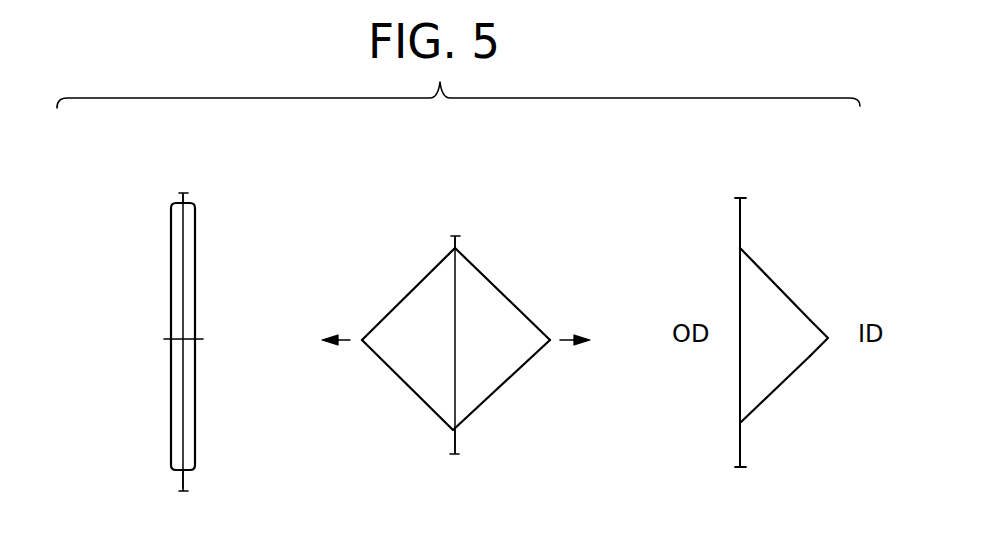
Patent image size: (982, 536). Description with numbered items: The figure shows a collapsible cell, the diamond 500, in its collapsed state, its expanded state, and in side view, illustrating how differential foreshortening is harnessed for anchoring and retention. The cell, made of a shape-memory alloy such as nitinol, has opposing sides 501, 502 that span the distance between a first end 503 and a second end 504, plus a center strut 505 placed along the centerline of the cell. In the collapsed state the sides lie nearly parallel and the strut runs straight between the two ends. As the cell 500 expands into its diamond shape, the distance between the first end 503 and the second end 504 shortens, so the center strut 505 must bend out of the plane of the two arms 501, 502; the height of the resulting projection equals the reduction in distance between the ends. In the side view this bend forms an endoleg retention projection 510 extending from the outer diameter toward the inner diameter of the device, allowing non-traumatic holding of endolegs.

The diamond 500 is at (218, 205).
The opposing side 501 is at (171, 246).
The opposing side 502 is at (196, 243).
The first end 503 is at (172, 204).
The second end 504 is at (172, 471).
The center strut 505 is at (187, 290).
The endoleg retention projection 510 is at (813, 328).